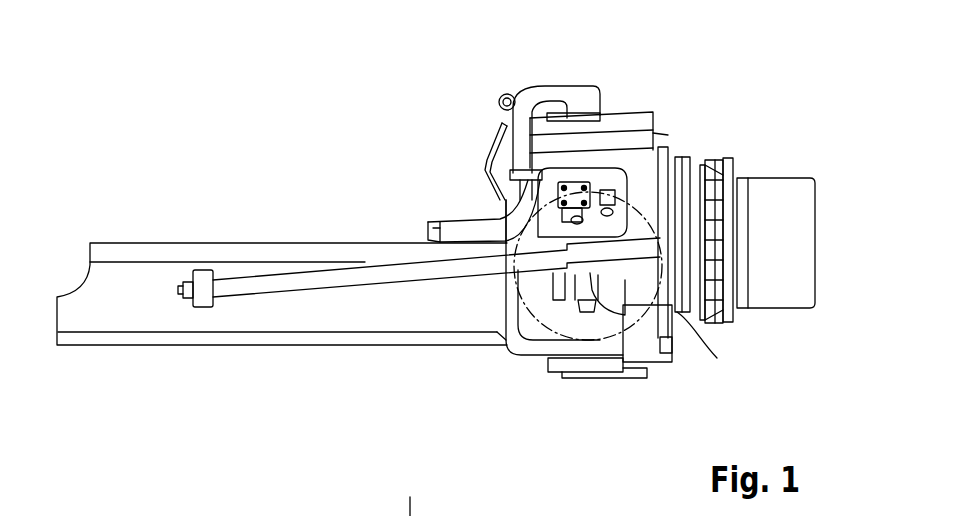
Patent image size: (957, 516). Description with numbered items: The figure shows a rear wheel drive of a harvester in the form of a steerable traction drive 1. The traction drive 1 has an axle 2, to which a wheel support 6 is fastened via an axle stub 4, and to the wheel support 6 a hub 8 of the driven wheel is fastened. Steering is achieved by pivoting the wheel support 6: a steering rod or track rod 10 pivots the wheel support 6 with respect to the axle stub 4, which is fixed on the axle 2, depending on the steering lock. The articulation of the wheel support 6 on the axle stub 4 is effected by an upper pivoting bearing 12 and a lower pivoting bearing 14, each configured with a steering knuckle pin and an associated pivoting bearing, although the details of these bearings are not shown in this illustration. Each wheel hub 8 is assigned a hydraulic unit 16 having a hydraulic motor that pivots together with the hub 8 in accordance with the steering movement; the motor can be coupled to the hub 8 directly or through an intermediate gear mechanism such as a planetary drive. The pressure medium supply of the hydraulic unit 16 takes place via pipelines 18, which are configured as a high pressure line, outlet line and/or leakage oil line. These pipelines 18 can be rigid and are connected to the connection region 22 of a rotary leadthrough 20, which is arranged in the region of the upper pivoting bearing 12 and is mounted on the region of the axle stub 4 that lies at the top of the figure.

The steerable traction drive 1 is at (278, 222).
The axle 2 is at (130, 287).
The axle stub 4 is at (637, 127).
The wheel support 6 is at (695, 158).
The hub 8 is at (782, 200).
The track rod 10 is at (280, 280).
The upper pivoting bearing 12 is at (592, 110).
The lower pivoting bearing 14 is at (592, 367).
The hydraulic unit 16 is at (653, 218).
The pipelines 18 is at (500, 100).
The rotary leadthrough 20 is at (563, 83).
The connection region 22 is at (502, 132).